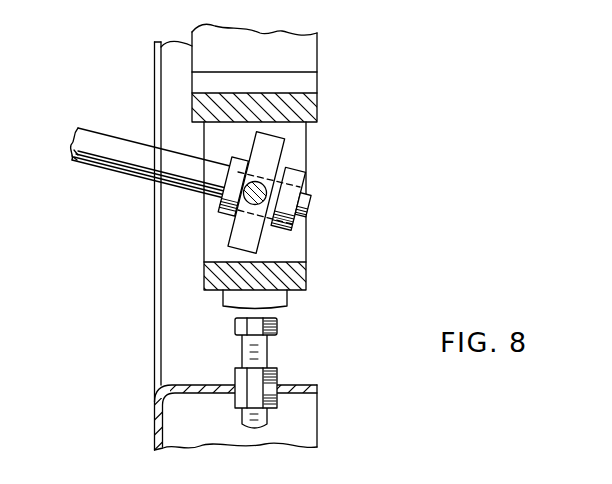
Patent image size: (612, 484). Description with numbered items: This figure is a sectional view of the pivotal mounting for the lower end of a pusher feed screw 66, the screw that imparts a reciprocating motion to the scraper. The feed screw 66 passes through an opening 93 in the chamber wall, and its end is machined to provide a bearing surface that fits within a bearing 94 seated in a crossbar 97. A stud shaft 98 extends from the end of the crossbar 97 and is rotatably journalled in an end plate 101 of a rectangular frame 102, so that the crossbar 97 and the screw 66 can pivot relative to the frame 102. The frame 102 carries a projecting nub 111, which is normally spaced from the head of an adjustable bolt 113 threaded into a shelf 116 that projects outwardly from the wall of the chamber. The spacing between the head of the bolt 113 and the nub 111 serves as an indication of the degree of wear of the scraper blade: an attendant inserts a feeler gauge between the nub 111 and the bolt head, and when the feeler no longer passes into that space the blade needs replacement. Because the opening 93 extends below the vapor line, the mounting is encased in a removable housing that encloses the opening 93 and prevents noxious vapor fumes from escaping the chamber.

The pusher feed screw 66 is at (115, 137).
The opening 93 is at (157, 353).
The bearing 94 is at (304, 175).
The crossbar 97 is at (277, 145).
The stud shaft 98 is at (299, 203).
The end plate 101 is at (297, 248).
The rectangular frame 102 is at (322, 101).
The projecting nub 111 is at (287, 303).
The adjustable bolt 113 is at (270, 348).
The shelf 116 is at (297, 382).